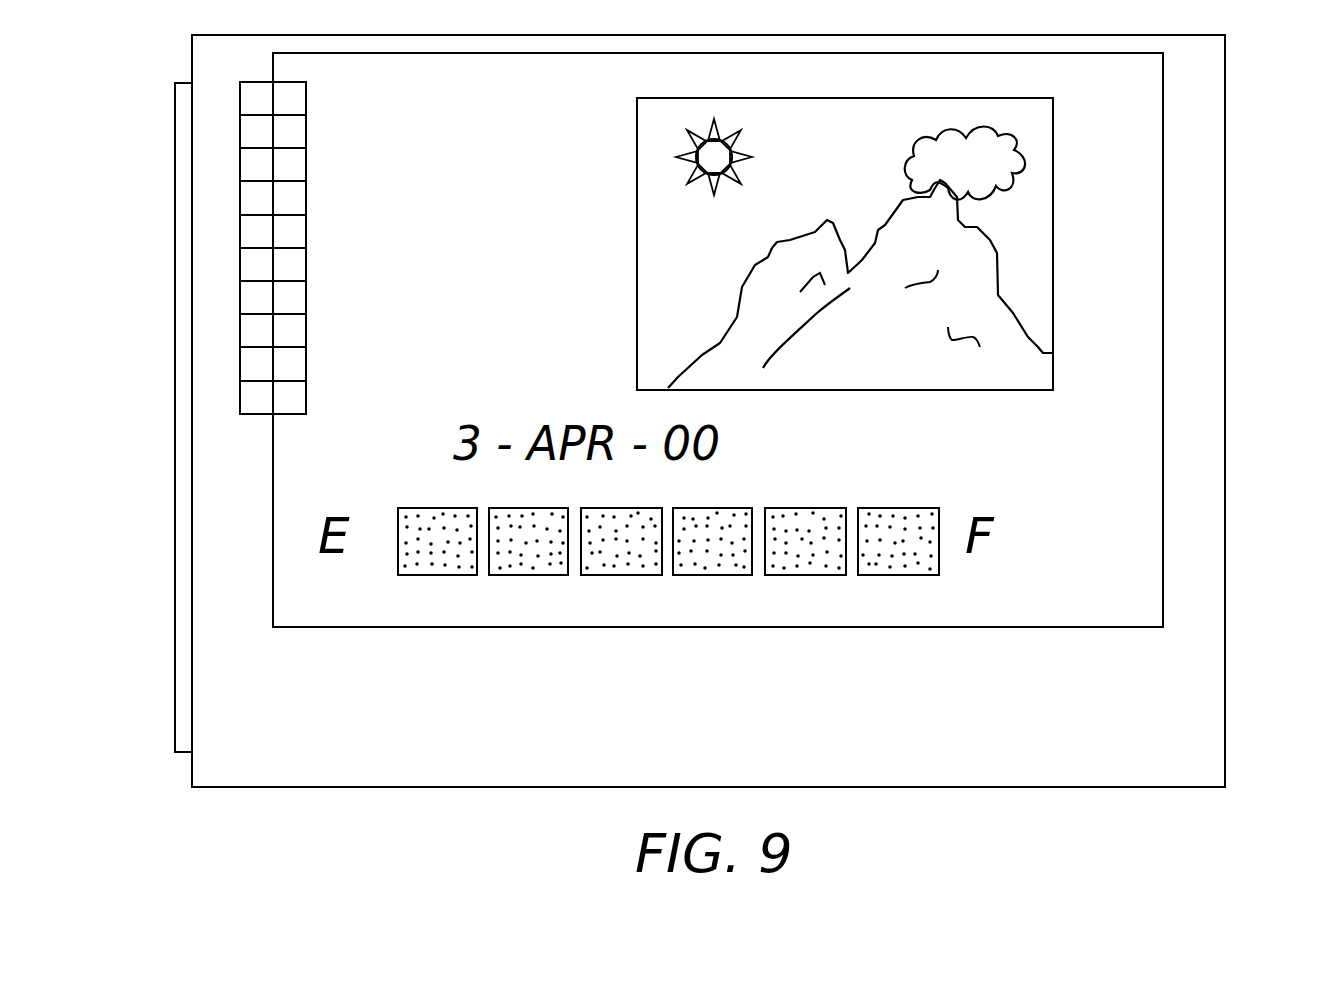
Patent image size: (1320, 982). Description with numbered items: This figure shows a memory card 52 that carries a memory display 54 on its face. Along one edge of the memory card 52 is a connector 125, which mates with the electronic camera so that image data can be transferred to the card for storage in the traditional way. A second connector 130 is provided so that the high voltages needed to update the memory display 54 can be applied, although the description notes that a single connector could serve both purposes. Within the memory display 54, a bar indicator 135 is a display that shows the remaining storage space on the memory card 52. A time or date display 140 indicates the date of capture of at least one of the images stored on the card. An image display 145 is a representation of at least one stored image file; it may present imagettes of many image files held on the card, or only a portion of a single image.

The memory card 52 is at (1225, 605).
The memory display 54 is at (1163, 240).
The connector 125 is at (178, 232).
The connector 130 is at (306, 237).
The bar indicator 135 is at (528, 575).
The time or date display 140 is at (300, 397).
The image display 145 is at (637, 170).